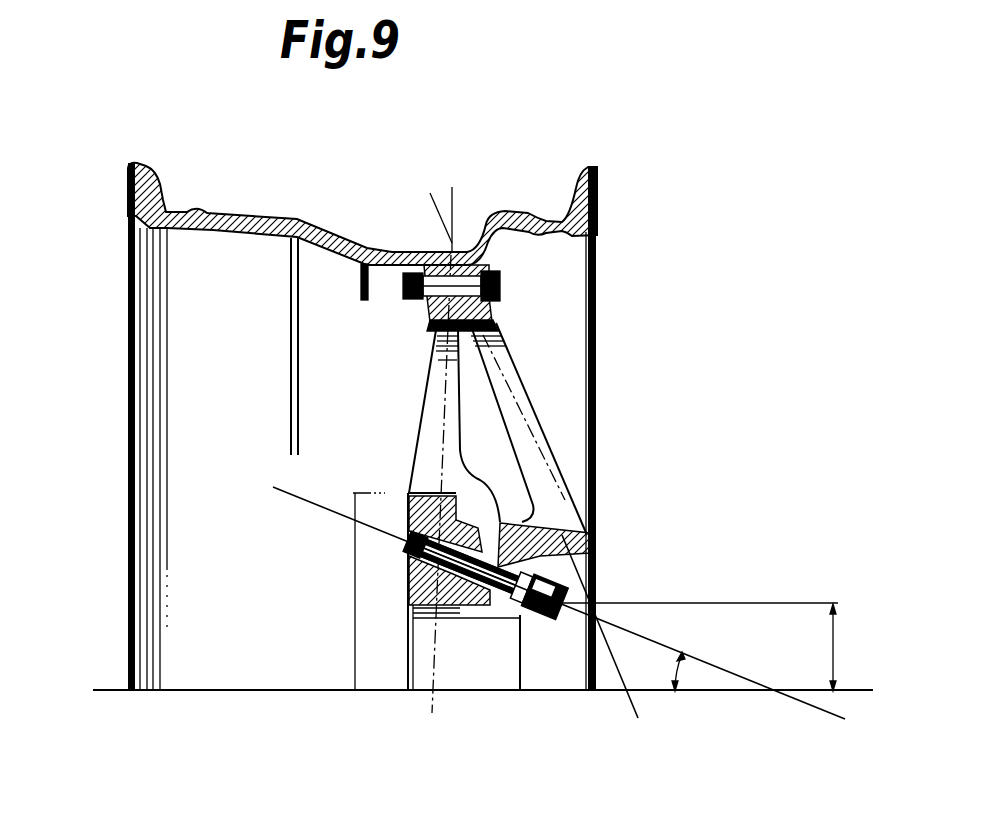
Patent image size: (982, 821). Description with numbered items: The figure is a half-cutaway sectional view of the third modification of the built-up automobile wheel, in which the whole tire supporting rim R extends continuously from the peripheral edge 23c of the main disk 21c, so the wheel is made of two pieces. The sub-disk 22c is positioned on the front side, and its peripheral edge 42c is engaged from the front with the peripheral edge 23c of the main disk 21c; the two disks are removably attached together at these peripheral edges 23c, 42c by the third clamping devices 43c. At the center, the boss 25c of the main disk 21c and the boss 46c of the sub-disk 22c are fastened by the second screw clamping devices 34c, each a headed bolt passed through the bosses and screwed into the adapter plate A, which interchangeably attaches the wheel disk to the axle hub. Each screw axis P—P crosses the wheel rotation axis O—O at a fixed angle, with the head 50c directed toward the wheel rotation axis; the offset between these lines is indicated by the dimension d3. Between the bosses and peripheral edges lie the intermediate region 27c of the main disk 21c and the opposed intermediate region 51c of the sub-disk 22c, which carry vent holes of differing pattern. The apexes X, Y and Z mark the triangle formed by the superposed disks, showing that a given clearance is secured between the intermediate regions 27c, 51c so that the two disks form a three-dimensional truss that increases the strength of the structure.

The main disk 21c is at (412, 419).
The sub-disk 22c is at (553, 424).
The peripheral edge of the main disk 23c is at (430, 318).
The boss of the main disk 25c is at (433, 480).
The intermediate region of the main disk 27c is at (432, 374).
The second screw clamping device 34c is at (492, 622).
The peripheral edge of the sub-disk 42c is at (494, 313).
The third clamping device 43c is at (497, 280).
The boss of the sub-disk 46c is at (597, 540).
The head of the second screw clamping device 50c is at (548, 624).
The intermediate region of the sub-disk 51c is at (527, 387).
The tire supporting rim R is at (122, 411).
The adapter plate A is at (407, 582).
The triangle apex X is at (450, 243).
The triangle apex Y is at (432, 694).
The triangle apex Z is at (626, 694).
The screw axis P— P is at (564, 601).
The wheel rotation axis O— O is at (482, 691).
The offset dimension d3 is at (703, 647).